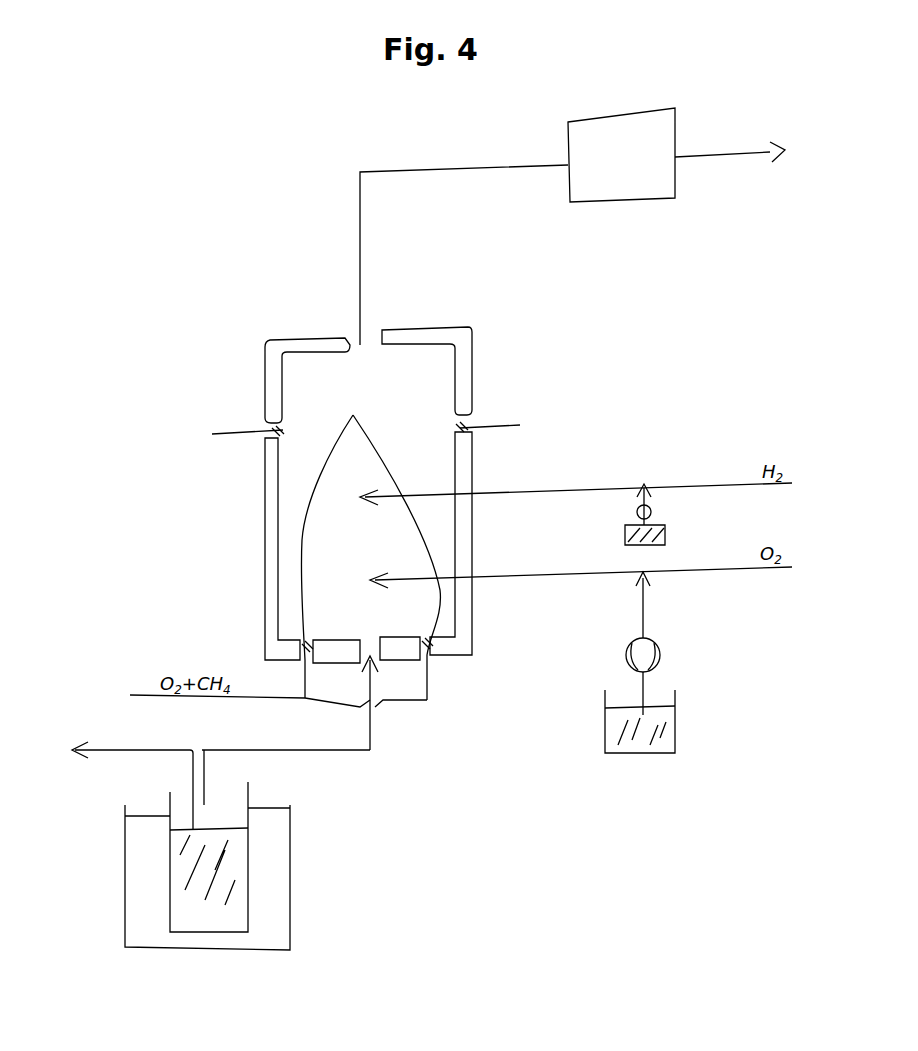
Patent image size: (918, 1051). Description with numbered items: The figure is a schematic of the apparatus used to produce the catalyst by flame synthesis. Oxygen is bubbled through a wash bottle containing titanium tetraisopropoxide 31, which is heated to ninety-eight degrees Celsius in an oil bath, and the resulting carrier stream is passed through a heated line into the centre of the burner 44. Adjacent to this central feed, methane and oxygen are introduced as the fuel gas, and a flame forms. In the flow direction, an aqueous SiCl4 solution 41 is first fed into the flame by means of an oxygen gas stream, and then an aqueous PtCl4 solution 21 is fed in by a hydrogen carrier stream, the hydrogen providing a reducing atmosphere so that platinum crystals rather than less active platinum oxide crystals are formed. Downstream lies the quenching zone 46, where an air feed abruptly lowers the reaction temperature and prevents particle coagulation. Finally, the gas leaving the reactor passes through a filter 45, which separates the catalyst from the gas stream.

The quenching zone 46 is at (342, 422).
The filter 45 is at (610, 185).
The burner 44 is at (262, 585).
The aqueous PtCl4 solution 21 is at (668, 534).
The aqueous SiCl4 solution 41 is at (632, 730).
The titanium tetraisopropoxide 31 is at (205, 915).